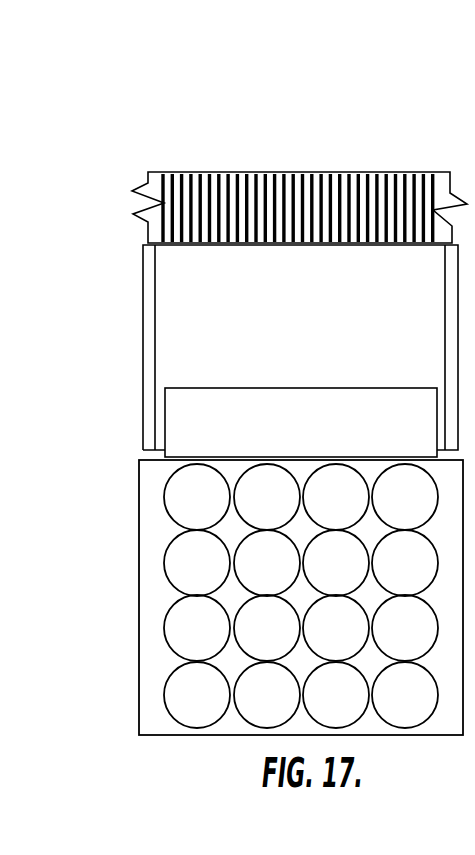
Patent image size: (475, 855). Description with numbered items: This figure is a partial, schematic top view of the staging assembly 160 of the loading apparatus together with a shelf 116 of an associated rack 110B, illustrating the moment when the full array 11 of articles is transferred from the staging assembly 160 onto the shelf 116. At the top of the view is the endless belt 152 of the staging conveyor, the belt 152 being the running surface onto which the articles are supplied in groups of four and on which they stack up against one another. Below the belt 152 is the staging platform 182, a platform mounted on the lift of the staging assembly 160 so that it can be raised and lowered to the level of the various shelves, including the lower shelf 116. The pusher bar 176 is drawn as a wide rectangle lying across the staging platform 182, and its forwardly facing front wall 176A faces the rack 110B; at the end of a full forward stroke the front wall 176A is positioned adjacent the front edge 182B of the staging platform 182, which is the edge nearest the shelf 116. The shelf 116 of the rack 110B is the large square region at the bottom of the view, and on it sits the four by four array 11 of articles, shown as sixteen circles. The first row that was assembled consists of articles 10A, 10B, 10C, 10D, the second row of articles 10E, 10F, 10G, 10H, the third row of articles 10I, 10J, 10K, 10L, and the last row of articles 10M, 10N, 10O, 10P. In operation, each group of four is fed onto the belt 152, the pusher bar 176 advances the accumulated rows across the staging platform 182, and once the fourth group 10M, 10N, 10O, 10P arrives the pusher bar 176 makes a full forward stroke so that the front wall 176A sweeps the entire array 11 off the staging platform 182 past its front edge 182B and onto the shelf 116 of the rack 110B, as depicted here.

The staging assembly 160 is at (326, 133).
The endless belt 152 is at (148, 188).
The staging platform 182 is at (200, 288).
The front edge 182B is at (160, 445).
The pusher bar 176 is at (275, 417).
The front wall 176A is at (366, 455).
The array 11 is at (137, 538).
The shelf 116 is at (147, 588).
The rack 110B is at (139, 663).
The article 10A is at (214, 707).
The article 10B is at (284, 707).
The article 10C is at (353, 707).
The article 10D is at (422, 707).
The article 10E is at (214, 640).
The article 10F is at (284, 640).
The article 10G is at (353, 640).
The article 10H is at (422, 640).
The article 10I is at (214, 575).
The article 10J is at (284, 575).
The article 10K is at (353, 575).
The article 10L is at (422, 575).
The article 10M is at (214, 509).
The article 10N is at (284, 509).
The article 10O is at (353, 509).
The article 10P is at (422, 509).